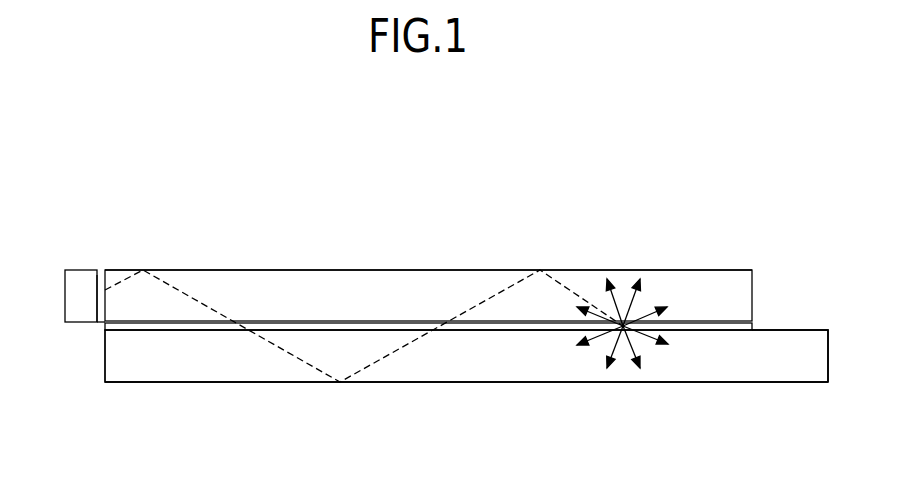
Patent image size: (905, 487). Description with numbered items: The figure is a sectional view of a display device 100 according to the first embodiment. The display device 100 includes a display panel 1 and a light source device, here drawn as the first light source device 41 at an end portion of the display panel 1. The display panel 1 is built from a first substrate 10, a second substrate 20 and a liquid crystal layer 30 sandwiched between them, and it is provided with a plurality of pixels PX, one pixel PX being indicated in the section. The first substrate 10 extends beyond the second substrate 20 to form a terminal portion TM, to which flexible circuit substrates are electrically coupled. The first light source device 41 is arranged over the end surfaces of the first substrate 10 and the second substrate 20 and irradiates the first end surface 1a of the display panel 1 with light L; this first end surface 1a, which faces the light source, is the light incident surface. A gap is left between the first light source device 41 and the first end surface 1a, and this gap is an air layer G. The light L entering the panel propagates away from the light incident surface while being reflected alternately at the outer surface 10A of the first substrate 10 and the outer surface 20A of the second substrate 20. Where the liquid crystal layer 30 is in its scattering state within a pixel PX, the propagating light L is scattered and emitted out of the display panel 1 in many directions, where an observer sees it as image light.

The display device 100 is at (645, 185).
The display panel 1 is at (200, 398).
The first end surface 1a is at (99, 292).
The first light source device 41 is at (82, 277).
The second substrate 20 is at (458, 283).
The outer surface of the second substrate 20A is at (322, 270).
The liquid crystal layer 30 is at (111, 327).
The air layer G is at (92, 331).
The first substrate 10 is at (457, 367).
The outer surface of the first substrate 10A is at (322, 382).
The terminal portion TM is at (796, 345).
The light L is at (203, 303).
The pixel PX is at (648, 350).